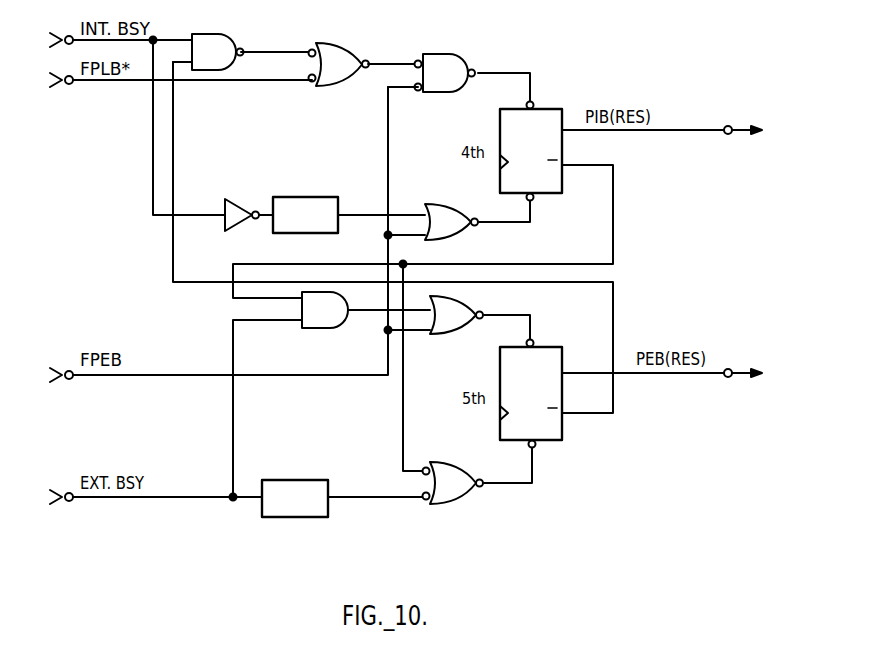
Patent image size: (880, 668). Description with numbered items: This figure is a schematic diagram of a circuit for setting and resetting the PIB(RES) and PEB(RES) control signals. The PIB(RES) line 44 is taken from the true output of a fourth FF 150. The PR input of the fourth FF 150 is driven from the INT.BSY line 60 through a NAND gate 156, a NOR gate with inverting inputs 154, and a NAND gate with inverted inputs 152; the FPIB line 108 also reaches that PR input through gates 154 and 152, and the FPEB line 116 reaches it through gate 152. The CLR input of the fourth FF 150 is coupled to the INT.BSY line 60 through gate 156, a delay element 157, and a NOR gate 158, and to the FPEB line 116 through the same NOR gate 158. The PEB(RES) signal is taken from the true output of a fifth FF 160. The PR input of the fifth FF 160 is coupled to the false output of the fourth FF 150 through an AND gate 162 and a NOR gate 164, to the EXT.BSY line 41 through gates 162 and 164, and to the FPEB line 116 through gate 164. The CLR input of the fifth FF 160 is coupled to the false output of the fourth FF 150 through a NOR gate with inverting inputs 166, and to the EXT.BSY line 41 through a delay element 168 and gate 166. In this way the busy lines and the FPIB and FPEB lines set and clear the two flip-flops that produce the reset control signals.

The INT.BSY line 60 is at (69, 44).
The FPIB line 108 is at (69, 84).
The FPEB line 116 is at (69, 379).
The EXT.BSY line 41 is at (69, 501).
The PIB(RES) line 44 is at (731, 126).
The NAND gate 156 is at (213, 33).
The NOR gate with inverting inputs 154 is at (338, 43).
The NAND gate with inverted inputs 152 is at (447, 54).
The fourth FF 150 is at (545, 108).
The delay element 157 is at (313, 197).
The NOR gate 158 is at (445, 204).
The AND gate 162 is at (346, 300).
The NOR gate 164 is at (458, 297).
The fifth FF 160 is at (540, 347).
The NOR gate with inverting inputs 166 is at (457, 463).
The delay element 168 is at (308, 480).